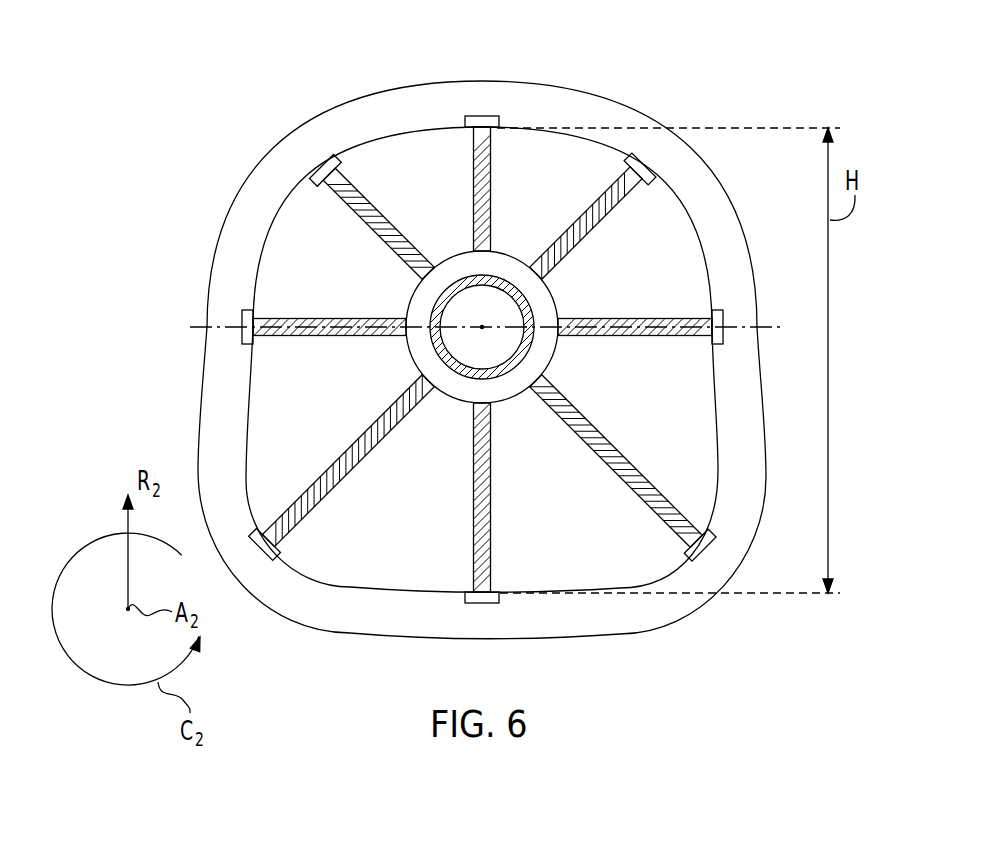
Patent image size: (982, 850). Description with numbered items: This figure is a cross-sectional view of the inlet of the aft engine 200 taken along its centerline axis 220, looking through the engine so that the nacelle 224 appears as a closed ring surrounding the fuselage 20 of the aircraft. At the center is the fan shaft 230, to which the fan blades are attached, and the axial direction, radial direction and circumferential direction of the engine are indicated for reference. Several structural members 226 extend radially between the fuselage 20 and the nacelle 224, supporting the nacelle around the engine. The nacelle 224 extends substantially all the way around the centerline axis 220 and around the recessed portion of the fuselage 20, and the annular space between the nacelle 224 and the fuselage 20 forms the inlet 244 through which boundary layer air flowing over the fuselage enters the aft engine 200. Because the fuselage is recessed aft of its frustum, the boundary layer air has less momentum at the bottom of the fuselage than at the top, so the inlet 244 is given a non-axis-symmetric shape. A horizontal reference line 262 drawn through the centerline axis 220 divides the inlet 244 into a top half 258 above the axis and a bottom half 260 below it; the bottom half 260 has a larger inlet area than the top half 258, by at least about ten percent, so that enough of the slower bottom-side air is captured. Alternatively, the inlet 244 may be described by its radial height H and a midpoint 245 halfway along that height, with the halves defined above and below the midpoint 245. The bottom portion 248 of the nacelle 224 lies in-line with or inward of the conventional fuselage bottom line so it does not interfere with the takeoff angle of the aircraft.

The fuselage 20 is at (407, 303).
The aft engine 200 is at (506, 352).
The centerline axis 220 is at (483, 327).
The nacelle 224 is at (507, 362).
The structural members 226 is at (492, 162).
The fan shaft 230 is at (507, 283).
The inlet 244 is at (670, 285).
The midpoint 245 is at (822, 345).
The bottom portion 248 is at (502, 653).
The top half 258 is at (328, 223).
The bottom half 260 is at (285, 437).
The horizontal reference line 262 is at (203, 327).